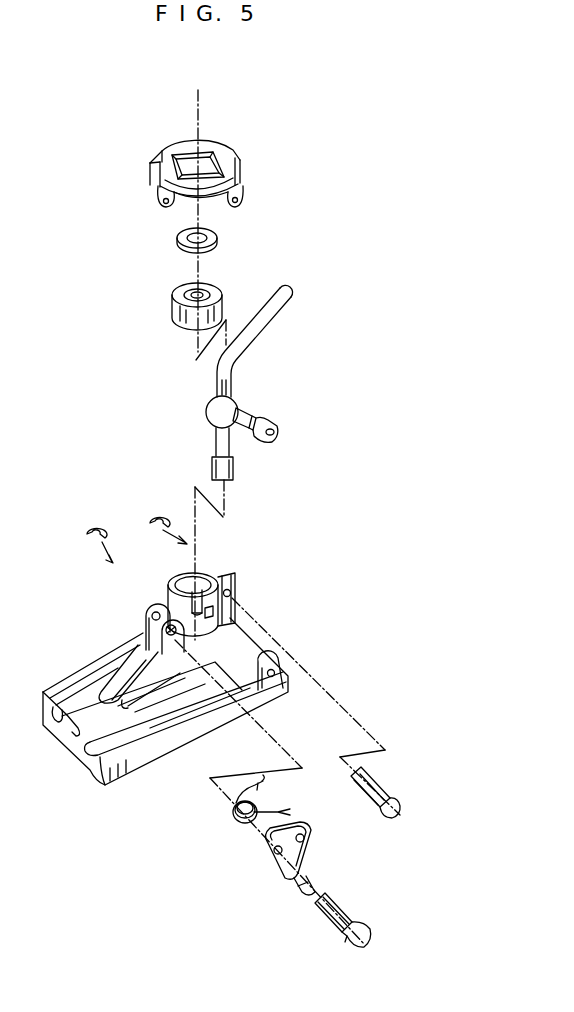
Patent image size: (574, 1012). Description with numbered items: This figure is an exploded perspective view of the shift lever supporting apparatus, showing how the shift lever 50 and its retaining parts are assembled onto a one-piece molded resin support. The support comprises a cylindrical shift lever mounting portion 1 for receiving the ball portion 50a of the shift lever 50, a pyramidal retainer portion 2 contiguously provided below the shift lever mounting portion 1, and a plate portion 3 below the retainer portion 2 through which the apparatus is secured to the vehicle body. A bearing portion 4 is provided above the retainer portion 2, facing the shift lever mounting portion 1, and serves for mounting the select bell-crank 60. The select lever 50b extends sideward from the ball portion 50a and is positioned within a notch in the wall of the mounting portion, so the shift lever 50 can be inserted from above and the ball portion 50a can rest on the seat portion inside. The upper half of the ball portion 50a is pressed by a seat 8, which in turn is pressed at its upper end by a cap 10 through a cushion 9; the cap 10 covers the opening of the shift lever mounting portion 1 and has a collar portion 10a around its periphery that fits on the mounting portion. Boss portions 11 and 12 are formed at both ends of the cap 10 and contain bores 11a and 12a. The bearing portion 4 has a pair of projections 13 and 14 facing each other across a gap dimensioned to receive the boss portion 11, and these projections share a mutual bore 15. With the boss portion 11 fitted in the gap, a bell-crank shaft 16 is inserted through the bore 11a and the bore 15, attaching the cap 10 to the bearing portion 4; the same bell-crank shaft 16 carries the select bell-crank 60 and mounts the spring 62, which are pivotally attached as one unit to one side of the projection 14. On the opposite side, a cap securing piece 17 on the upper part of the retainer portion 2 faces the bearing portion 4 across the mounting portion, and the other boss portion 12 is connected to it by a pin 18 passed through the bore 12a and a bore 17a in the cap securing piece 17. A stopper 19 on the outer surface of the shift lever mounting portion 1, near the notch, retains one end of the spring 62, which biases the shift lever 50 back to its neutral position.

The shift lever mounting portion 1 is at (202, 577).
The retainer portion 2 is at (266, 651).
The plate portion 3 is at (116, 786).
The bearing portion 4 is at (152, 595).
The seat 8 is at (171, 313).
The cushion 9 is at (179, 249).
The cap 10 is at (207, 145).
The collar portion 10a is at (209, 205).
The boss portion 11 is at (149, 181).
The bore 11a is at (164, 205).
The boss portion 12 is at (242, 188).
The bore 12a is at (238, 203).
The projection 13 is at (145, 612).
The projection 14 is at (158, 630).
The bore 15 is at (140, 650).
The bell-crank shaft 16 is at (344, 938).
The cap securing piece 17 is at (225, 579).
The bore 17a is at (231, 590).
The pin 18 is at (380, 785).
The stopper 19 is at (232, 619).
The shift lever 50 is at (233, 380).
The ball portion 50a is at (206, 415).
The select lever 50b is at (263, 422).
The select bell-crank 60 is at (279, 876).
The spring 62 is at (240, 829).